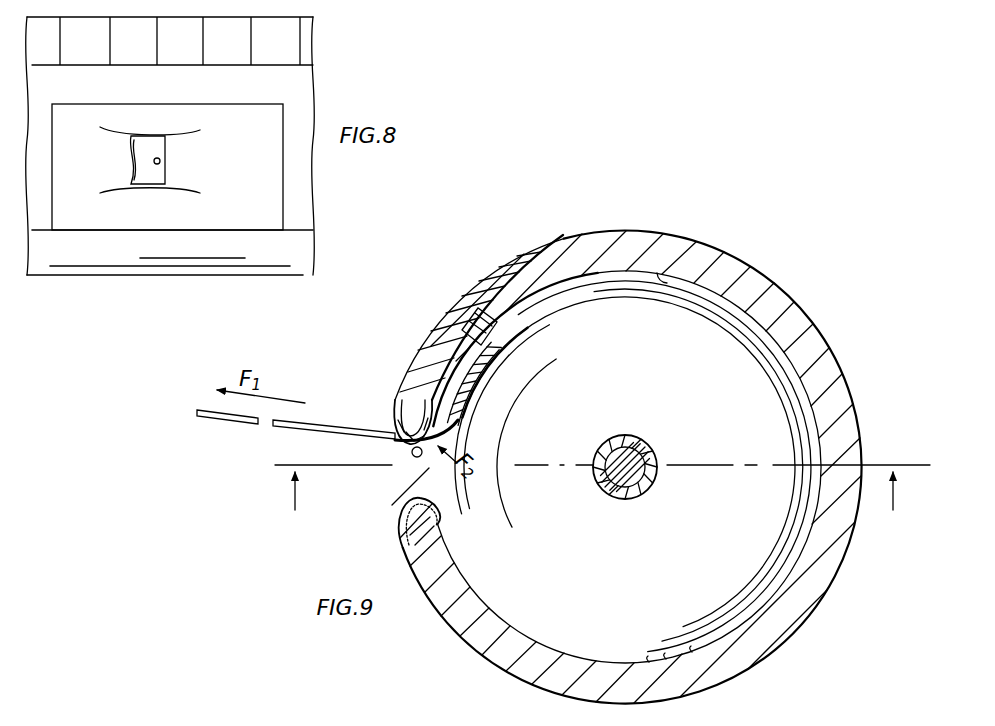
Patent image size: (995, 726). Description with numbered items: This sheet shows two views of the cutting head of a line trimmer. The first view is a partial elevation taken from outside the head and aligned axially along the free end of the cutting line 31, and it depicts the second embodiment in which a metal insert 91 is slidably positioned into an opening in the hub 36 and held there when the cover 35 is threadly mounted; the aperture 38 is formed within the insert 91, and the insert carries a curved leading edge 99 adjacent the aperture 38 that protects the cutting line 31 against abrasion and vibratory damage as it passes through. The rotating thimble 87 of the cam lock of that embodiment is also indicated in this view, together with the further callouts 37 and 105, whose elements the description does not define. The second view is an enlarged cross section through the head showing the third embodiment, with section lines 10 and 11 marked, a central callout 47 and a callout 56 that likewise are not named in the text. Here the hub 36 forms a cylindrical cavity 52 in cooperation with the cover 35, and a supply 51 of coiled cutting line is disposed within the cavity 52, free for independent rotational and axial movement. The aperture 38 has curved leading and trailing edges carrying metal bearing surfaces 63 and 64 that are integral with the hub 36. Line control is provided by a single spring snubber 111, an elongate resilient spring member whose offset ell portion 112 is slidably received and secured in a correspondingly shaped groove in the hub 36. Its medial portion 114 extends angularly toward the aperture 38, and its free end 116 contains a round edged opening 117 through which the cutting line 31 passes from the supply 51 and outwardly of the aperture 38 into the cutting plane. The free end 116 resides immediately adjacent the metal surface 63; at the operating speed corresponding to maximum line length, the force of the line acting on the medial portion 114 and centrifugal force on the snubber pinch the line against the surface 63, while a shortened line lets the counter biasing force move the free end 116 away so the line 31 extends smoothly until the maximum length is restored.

In FIG. 9, the section line 10- 10 is at (592, 506).
In FIG. 9, the section line 11- 11 is at (551, 375).
In FIG. 8, the cutting line 31 is at (160, 162).
In FIG. 9, the cutting line 31 is at (240, 426).
In FIG. 8, the cover 35 is at (288, 251).
In FIG. 8, the hub 36 is at (297, 83).
In FIG. 8, the upper rail 37 is at (283, 43).
In FIG. 8, the aperture 38 is at (140, 143).
In FIG. 9, the aperture 38 is at (393, 478).
In FIG. 9, the shaft 47 is at (638, 469).
In FIG. 9, the supply of coiled cutting line 51 is at (790, 384).
In FIG. 9, the cylindrical cavity 52 is at (627, 467).
In FIG. 9, the hub 56 is at (633, 437).
In FIG. 9, the metal bearing surface 63 is at (400, 418).
In FIG. 9, the metal bearing surface 64 is at (400, 512).
In FIG. 8, the rotating thimble 87 is at (150, 173).
In FIG. 8, the metal insert 91 is at (268, 194).
In FIG. 8, the leading edge 99 is at (132, 166).
In FIG. 8, the upper guide 105 is at (165, 173).
In FIG. 9, the spring snubber 111 is at (490, 348).
In FIG. 9, the offset ell portion 112 is at (478, 322).
In FIG. 9, the medial portion 114 is at (470, 378).
In FIG. 9, the free end 116 is at (394, 447).
In FIG. 9, the round edged opening 117 is at (440, 458).